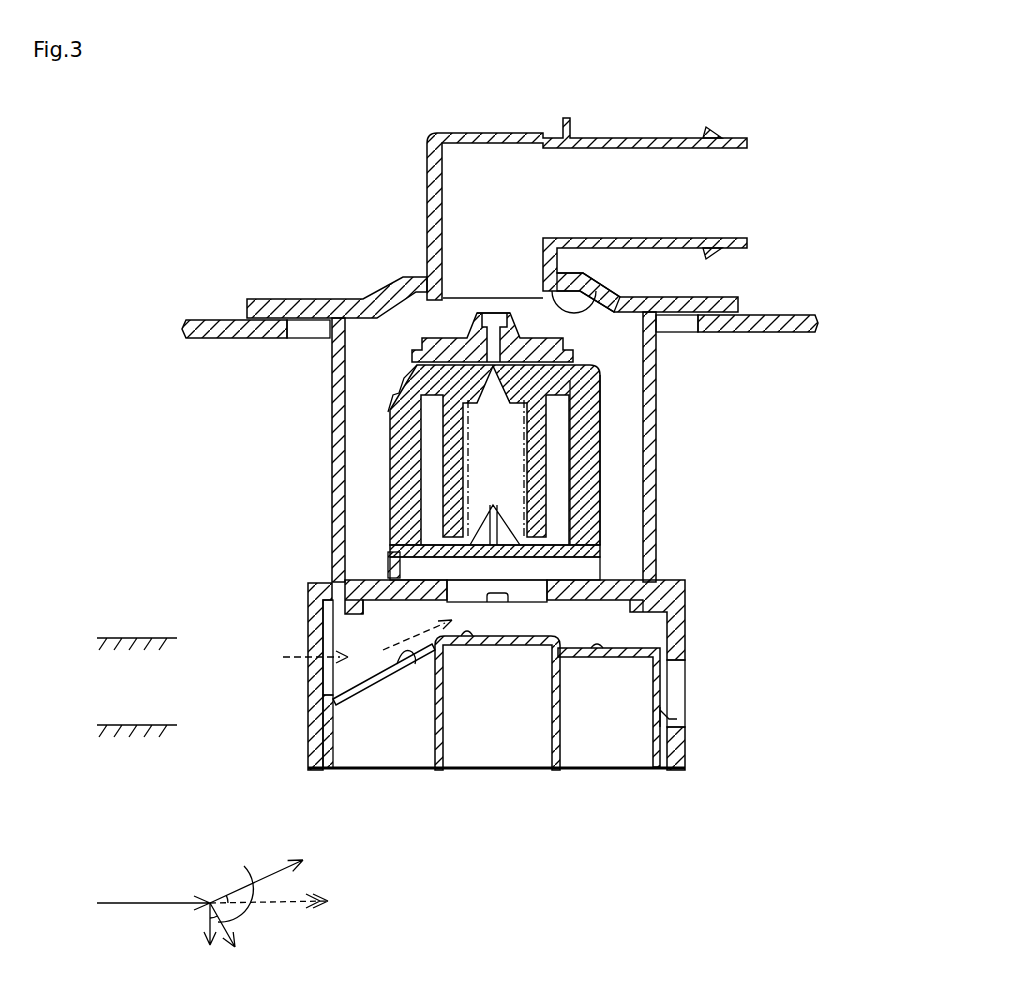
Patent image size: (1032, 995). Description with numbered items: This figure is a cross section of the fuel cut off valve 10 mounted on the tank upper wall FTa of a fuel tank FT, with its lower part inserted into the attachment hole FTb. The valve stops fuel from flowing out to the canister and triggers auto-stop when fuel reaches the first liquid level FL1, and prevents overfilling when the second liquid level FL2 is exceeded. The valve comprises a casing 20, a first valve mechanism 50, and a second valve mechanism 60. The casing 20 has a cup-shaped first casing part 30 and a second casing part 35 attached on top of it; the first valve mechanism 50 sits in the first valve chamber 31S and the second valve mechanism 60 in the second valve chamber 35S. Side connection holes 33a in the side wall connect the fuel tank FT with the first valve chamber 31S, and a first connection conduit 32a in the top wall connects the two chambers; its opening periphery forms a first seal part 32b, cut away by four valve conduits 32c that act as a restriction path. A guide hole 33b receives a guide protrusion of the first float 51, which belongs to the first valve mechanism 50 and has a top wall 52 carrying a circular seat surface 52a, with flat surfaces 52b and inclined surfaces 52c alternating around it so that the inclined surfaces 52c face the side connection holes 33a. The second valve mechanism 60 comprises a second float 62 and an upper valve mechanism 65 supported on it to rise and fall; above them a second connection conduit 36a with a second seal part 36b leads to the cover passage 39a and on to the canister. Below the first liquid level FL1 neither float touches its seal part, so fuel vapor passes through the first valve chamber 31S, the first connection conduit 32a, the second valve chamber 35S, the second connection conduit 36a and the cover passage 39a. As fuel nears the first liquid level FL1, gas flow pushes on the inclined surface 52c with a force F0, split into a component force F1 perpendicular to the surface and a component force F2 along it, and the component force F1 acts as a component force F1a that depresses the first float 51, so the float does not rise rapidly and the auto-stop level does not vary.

The fuel cut off valve 10 is at (330, 298).
The casing 20 is at (197, 513).
The first casing part 30 is at (308, 603).
The first valve chamber 31S is at (357, 633).
The first connection conduit 32a is at (527, 597).
The first seal part 32b is at (633, 609).
The valve conduits 32c is at (507, 593).
The side connection holes 33a is at (360, 676).
The guide hole 33b is at (682, 701).
The second casing part 35 is at (332, 527).
The second valve chamber 35S is at (377, 413).
The second connection conduit 36a is at (487, 278).
The second seal part 36b is at (612, 298).
The cover passage 39a is at (617, 162).
The first valve mechanism 50 is at (322, 694).
The first float 51 is at (400, 658).
The top wall 52 is at (548, 830).
The seat surface 52a is at (467, 634).
The flat surfaces 52b is at (597, 650).
The inclined surfaces 52c is at (417, 662).
The second valve mechanism 60 is at (390, 467).
The second float 62 is at (600, 440).
The upper valve mechanism 65 is at (415, 371).
The fuel tank FT is at (538, 331).
The tank upper wall FTa is at (780, 315).
The attachment hole FTb is at (690, 334).
The first liquid level FL1 is at (133, 725).
The second liquid level FL2 is at (133, 638).
The force F0 is at (212, 893).
The component force F1 is at (236, 941).
The component force F1a is at (202, 941).
The component force F2 is at (272, 884).